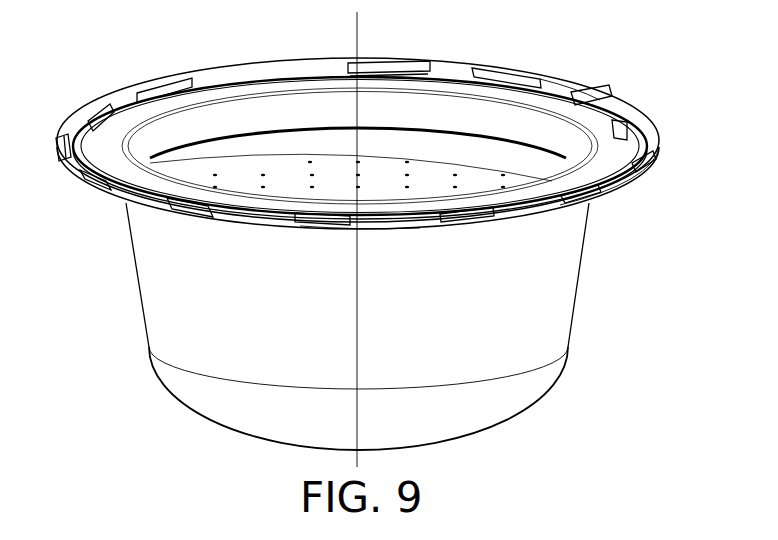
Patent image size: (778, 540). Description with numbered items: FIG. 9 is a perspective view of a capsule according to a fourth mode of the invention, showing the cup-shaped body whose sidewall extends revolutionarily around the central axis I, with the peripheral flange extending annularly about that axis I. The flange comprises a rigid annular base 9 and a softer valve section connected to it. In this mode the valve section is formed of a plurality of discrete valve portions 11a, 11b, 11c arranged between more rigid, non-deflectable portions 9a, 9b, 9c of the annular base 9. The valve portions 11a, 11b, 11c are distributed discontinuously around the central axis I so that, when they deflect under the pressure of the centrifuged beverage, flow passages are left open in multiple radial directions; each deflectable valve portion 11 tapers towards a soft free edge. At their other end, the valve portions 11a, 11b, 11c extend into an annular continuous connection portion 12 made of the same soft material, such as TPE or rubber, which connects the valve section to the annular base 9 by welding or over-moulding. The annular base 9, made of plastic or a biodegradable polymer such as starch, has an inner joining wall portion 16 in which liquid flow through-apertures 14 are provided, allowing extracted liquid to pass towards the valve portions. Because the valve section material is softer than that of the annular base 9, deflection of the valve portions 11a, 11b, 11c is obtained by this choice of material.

The central axis I is at (359, 46).
The annular base 9 is at (620, 118).
The non-deflectable portion 9a is at (470, 224).
The non-deflectable portion 9b is at (587, 195).
The non-deflectable portion 9c is at (655, 157).
The deflectable valve portion 11 is at (118, 198).
The discrete valve portion 11a is at (409, 230).
The discrete valve portion 11b is at (543, 224).
The discrete valve portion 11c is at (626, 176).
The connection portion 12 is at (67, 138).
The liquid flow through-aperture 14 is at (528, 72).
The inner joining wall portion 16 is at (593, 92).